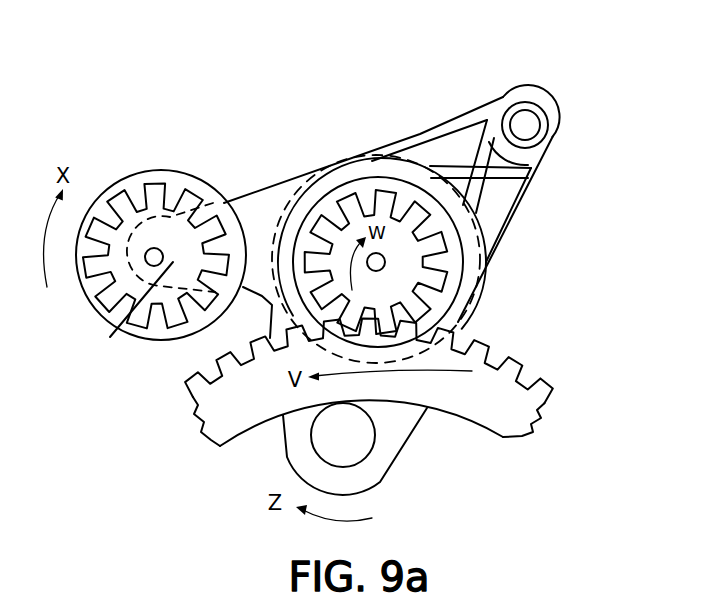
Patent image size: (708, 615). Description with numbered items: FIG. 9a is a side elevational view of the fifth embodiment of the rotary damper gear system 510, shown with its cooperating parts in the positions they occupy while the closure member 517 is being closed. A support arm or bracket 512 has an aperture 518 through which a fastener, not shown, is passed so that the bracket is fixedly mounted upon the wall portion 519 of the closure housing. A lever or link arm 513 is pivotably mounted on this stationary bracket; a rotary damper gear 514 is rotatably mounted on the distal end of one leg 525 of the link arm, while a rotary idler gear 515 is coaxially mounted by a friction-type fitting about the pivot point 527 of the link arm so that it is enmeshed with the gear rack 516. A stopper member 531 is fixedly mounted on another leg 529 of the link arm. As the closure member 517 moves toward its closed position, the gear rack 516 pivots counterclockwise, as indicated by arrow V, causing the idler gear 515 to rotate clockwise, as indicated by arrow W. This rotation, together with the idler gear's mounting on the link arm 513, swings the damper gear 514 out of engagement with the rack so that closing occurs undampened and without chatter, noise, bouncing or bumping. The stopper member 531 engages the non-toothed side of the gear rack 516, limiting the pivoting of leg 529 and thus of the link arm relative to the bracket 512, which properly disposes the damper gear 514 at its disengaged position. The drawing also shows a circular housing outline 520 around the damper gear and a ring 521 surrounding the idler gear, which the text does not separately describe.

The rotary damper gear system 510 is at (370, 88).
The support arm or bracket 512 is at (463, 113).
The lever or link arm 513 is at (258, 203).
The rotary damper gear 514 is at (147, 207).
The rotary idler gear 515 is at (405, 264).
The gear rack 516 is at (500, 420).
The closure member 517 is at (456, 463).
The aperture 518 is at (534, 130).
The wall portion 519 is at (591, 198).
The gear housing 520 is at (134, 188).
The gear ring 521 is at (452, 223).
The leg 525 is at (125, 315).
The pivot point 527 is at (381, 265).
The leg 529 is at (380, 482).
The stopper member 531 is at (323, 440).